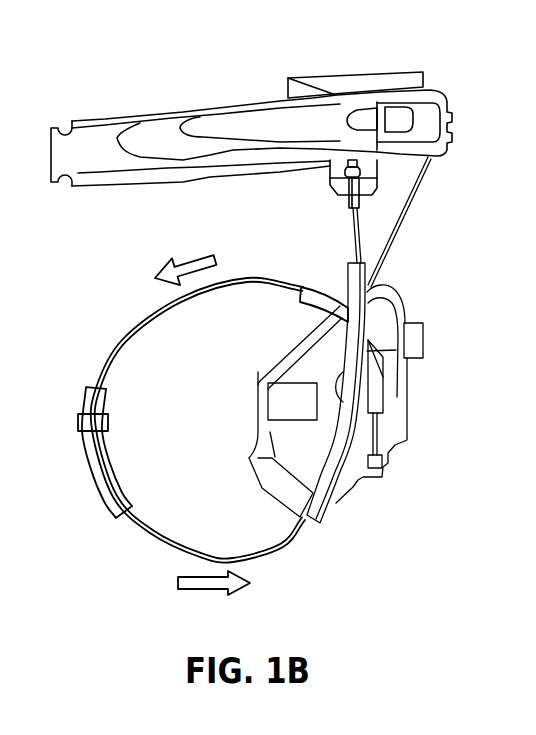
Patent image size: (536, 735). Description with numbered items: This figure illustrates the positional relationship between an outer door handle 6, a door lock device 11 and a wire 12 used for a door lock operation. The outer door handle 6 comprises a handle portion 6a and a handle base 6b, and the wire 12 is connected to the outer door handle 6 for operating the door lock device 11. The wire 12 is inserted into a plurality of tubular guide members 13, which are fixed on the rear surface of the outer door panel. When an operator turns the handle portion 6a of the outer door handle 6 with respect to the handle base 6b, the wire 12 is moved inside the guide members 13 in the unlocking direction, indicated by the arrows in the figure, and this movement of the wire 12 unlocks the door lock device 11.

The outer door handle 6 is at (243, 54).
The handle portion 6a is at (272, 122).
The handle base 6b is at (107, 119).
The door lock device 11 is at (408, 407).
The wire 12 is at (122, 336).
The tubular guide members 13 is at (83, 467).